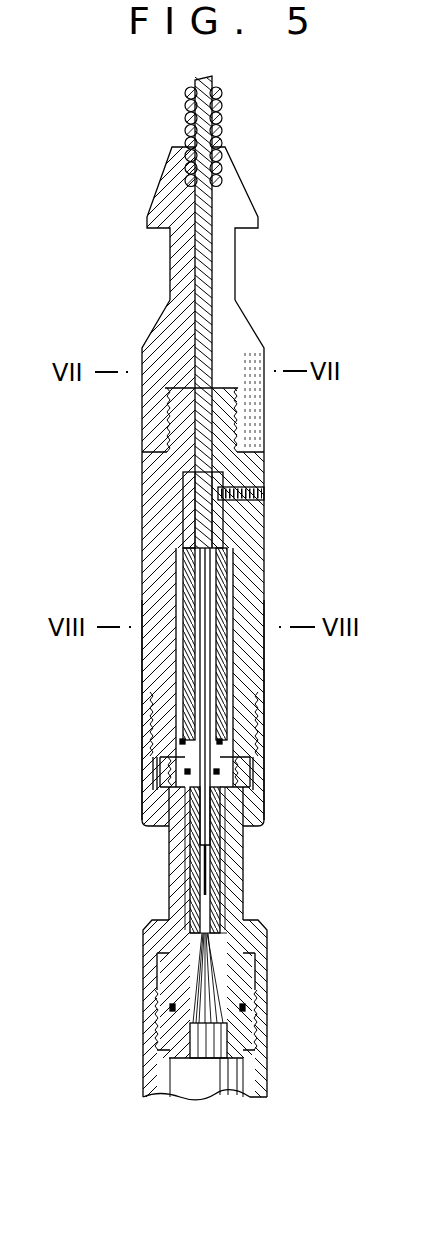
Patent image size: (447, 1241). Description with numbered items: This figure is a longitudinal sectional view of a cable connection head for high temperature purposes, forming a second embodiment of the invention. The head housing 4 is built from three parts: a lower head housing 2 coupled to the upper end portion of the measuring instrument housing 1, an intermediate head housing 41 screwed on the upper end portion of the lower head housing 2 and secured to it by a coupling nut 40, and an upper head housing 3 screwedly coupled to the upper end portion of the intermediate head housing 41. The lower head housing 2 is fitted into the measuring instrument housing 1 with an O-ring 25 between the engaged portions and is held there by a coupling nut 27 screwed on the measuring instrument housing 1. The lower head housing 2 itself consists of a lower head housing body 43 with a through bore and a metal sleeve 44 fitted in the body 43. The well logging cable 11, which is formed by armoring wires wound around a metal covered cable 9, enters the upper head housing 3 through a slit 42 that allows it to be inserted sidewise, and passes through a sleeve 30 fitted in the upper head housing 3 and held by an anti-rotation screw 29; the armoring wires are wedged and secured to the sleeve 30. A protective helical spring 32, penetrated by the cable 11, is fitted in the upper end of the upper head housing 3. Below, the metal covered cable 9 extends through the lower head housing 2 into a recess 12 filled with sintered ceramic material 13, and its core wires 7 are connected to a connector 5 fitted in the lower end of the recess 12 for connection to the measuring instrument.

The measuring instrument housing 1 is at (150, 1081).
The lower head housing 2 is at (177, 771).
The upper head housing 3 is at (170, 290).
The head housing 4 is at (136, 455).
The connector 5 is at (215, 1043).
The core wires 7 is at (203, 900).
The metal covered cable 9 is at (211, 611).
The well logging cable 11 is at (216, 280).
The recess 12 is at (220, 862).
The ceramic material 13 is at (192, 834).
The O-ring 25 is at (246, 1011).
The coupling nut 27 is at (263, 935).
The anti-rotation screw 29 is at (236, 491).
The sleeve 30 is at (188, 527).
The protective helical spring 32 is at (185, 122).
The coupling nut 40 is at (263, 823).
The intermediate head housing 41 is at (148, 663).
The slit 42 is at (233, 334).
The lower head housing body 43 is at (168, 869).
The metal sleeve 44 is at (222, 808).